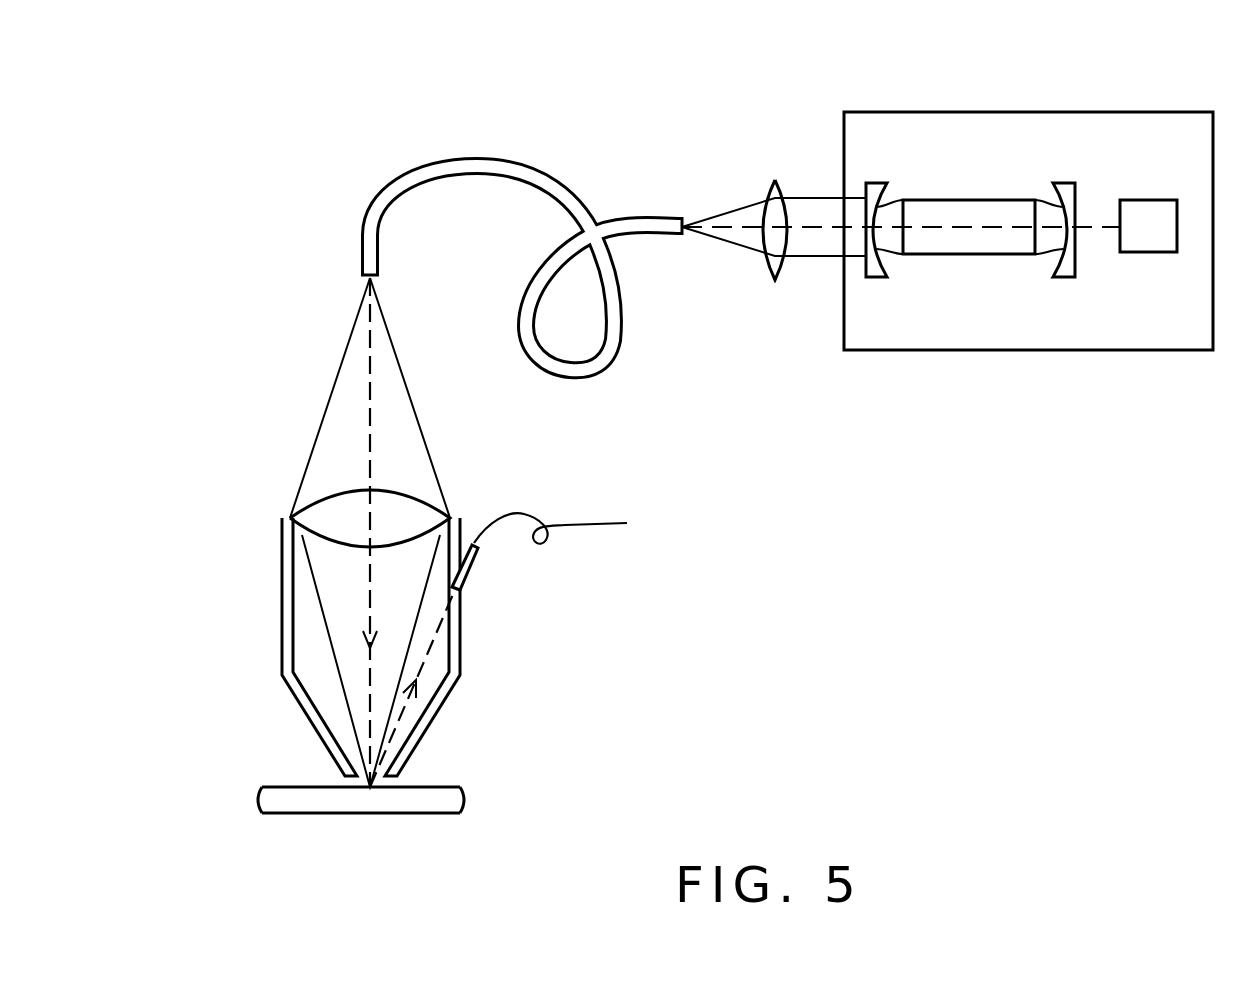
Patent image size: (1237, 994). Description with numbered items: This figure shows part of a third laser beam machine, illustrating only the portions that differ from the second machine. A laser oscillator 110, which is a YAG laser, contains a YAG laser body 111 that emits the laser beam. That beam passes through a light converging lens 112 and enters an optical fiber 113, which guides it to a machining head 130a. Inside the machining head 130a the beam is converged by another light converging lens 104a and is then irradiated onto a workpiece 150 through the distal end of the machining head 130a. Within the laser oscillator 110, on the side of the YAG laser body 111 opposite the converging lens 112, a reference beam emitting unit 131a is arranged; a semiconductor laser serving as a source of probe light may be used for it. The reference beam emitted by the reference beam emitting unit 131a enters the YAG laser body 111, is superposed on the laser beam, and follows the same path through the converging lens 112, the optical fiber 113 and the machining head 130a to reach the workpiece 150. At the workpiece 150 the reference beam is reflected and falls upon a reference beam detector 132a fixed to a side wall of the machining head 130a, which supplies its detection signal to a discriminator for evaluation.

The laser oscillator 110 is at (1048, 112).
The YAG laser body 111 is at (973, 254).
The light converging lens 112 is at (783, 180).
The optical fiber 113 is at (533, 170).
The reference beam emitting unit 131a is at (1150, 252).
The light converging lens 104a is at (485, 470).
The machining head 130a is at (462, 648).
The reference beam detector 132a is at (473, 568).
The workpiece 150 is at (433, 787).